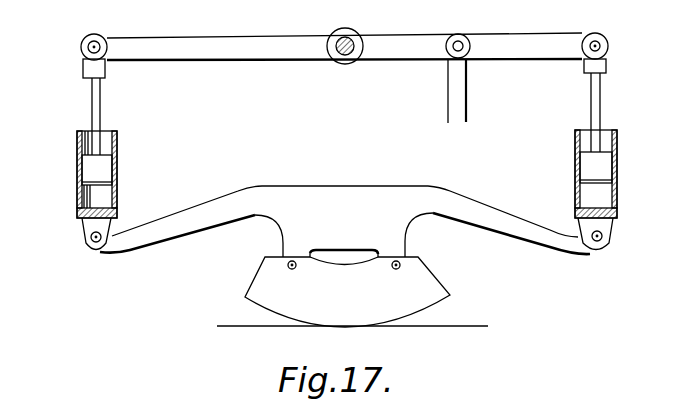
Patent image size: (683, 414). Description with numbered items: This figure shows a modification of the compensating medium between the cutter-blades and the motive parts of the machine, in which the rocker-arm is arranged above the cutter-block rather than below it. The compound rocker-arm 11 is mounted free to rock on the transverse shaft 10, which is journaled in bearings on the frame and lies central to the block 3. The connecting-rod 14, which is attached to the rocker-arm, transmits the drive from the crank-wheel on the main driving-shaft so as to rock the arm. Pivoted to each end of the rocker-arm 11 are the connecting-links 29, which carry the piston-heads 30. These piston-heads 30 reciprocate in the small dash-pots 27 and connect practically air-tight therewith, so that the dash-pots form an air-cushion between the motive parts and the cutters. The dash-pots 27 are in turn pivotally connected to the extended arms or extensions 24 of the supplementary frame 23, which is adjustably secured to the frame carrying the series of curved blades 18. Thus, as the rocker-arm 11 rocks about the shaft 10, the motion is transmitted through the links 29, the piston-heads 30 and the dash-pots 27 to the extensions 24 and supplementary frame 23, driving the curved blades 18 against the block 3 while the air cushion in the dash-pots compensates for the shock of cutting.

The block 3 is at (440, 330).
The transverse shaft 10 is at (352, 40).
The compound rocker-arm 11 is at (238, 57).
The connecting-rod 14 is at (462, 90).
The curved blades 18 is at (347, 288).
The supplementary frame 23 is at (344, 221).
The extensions 24 is at (183, 228).
The dash-pots 27 is at (117, 168).
The connecting-links 29 is at (102, 90).
The piston-heads 30 is at (93, 168).